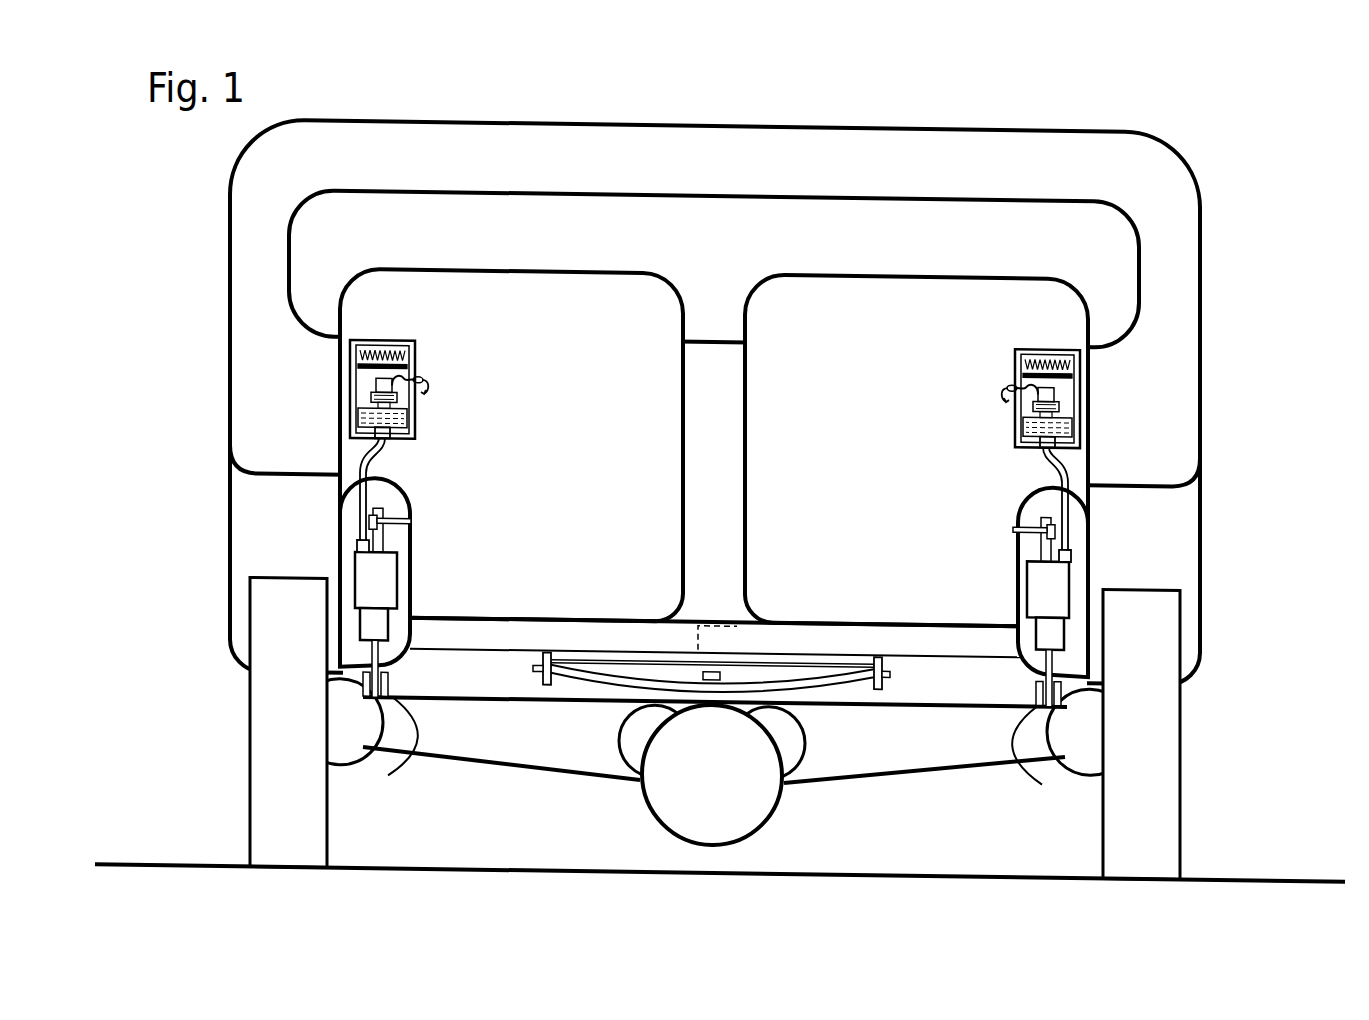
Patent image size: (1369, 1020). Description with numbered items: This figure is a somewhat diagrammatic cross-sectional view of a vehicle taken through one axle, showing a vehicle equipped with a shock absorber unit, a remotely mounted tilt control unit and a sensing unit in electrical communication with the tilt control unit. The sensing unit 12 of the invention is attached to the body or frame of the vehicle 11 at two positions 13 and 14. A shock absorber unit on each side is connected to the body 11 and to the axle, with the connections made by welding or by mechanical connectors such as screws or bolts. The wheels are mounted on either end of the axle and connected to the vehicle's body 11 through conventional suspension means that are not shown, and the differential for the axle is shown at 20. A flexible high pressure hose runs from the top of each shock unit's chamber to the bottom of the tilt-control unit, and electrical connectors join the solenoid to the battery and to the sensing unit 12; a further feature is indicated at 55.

The vehicle body 11 is at (808, 629).
The sensing unit 12 is at (828, 663).
The attachment position 13 is at (548, 652).
The attachment position 14 is at (882, 655).
The differential 20 is at (777, 799).
The center member 55 is at (718, 638).